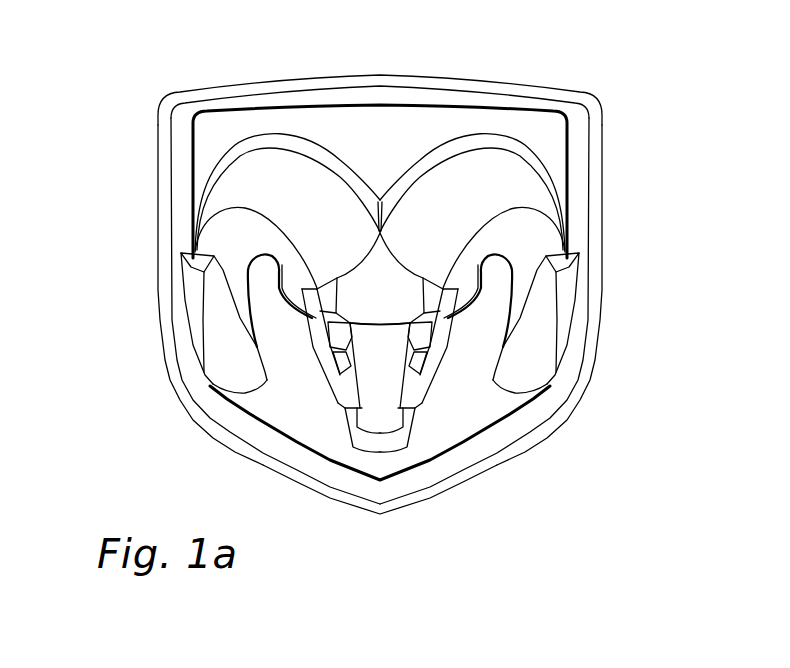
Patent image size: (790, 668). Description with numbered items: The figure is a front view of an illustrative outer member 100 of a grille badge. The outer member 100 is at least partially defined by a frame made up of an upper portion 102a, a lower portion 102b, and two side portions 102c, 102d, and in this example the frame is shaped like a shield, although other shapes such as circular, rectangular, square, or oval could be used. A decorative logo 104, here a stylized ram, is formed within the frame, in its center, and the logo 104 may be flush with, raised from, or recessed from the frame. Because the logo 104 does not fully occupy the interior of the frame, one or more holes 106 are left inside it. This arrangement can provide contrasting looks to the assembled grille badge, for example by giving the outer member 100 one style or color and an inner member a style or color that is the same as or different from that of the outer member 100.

The outer member 100 is at (370, 273).
The upper portion of frame 102a is at (351, 74).
The lower portion of frame 102b is at (399, 508).
The side portion of frame 102c is at (157, 238).
The side portion of frame 102d is at (601, 230).
The decorative logo 104 is at (525, 149).
The holes 106 is at (210, 146).